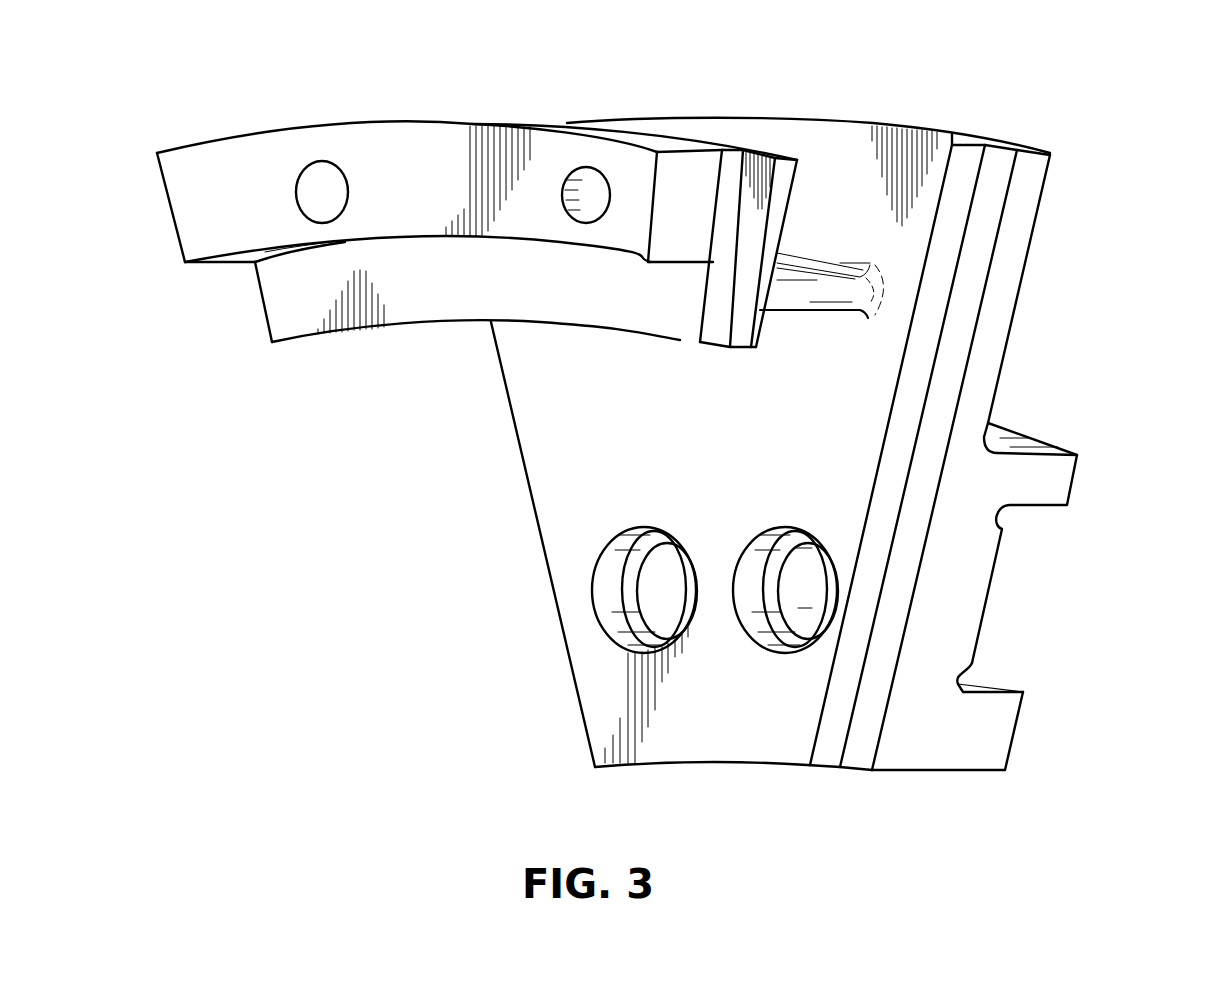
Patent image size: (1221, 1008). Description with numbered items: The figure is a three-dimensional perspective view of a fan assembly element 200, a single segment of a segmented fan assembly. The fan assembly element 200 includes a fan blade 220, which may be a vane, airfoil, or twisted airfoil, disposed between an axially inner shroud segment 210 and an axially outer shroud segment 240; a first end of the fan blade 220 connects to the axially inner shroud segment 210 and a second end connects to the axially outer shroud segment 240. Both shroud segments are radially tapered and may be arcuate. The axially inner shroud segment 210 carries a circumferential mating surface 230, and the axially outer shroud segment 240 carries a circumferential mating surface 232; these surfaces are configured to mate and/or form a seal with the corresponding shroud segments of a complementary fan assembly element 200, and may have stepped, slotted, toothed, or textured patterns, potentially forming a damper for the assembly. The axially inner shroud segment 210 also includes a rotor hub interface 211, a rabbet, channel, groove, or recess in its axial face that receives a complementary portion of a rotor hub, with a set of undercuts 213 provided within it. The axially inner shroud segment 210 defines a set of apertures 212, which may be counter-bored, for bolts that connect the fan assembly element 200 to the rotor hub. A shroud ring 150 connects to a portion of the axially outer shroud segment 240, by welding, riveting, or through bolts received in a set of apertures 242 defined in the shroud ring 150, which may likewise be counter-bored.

The shroud ring 150 is at (264, 156).
The set of apertures 242 is at (323, 161).
The axially inner shroud segment 210 is at (813, 153).
The circumferential mating surface 232 is at (762, 259).
The circumferential mating surface 230 is at (948, 240).
The fan blade 220 is at (792, 293).
The axially outer shroud segment 240 is at (434, 297).
The fan assembly element 200 is at (362, 616).
The rotor hub interface 211 is at (1073, 597).
The set of undercuts 213 is at (975, 678).
The set of apertures 212 is at (793, 613).